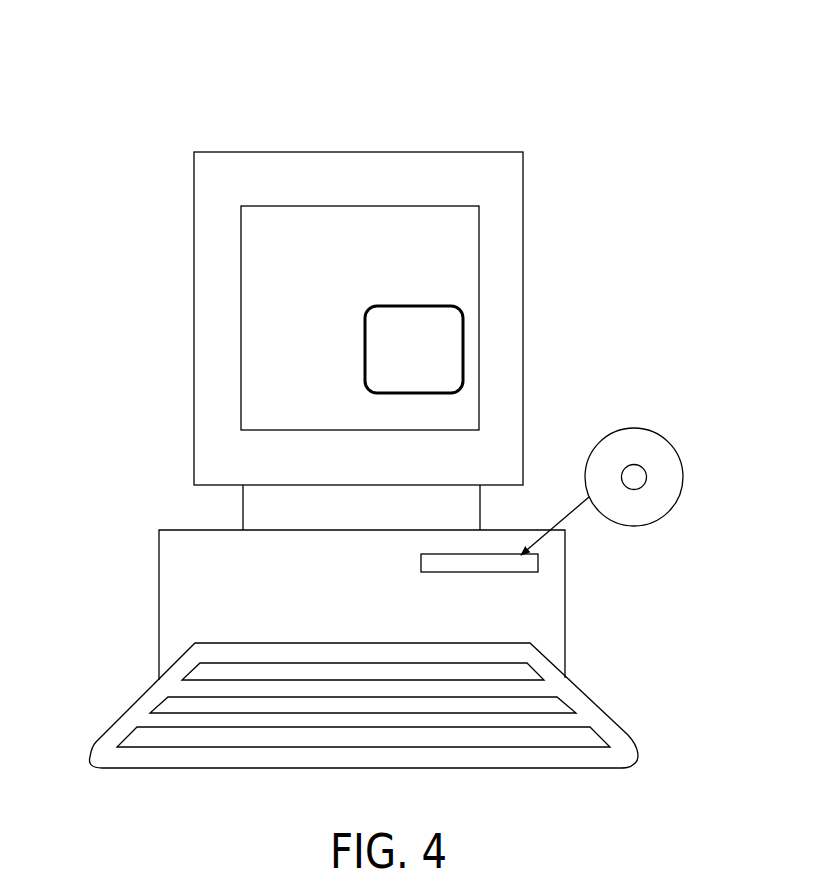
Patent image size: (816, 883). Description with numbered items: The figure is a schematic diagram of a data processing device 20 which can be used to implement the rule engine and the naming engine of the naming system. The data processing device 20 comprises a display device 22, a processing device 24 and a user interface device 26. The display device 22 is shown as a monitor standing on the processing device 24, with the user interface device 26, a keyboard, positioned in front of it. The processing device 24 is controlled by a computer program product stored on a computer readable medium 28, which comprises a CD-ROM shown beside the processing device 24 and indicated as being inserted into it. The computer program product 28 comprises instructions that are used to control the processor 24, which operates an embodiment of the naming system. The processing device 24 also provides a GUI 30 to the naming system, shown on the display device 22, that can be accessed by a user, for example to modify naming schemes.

The data processing device 20 is at (131, 125).
The display device 22 is at (523, 283).
The processing device 24 is at (159, 590).
The user interface device 26 is at (612, 716).
The computer readable medium 28 is at (683, 463).
The GUI 30 is at (465, 355).